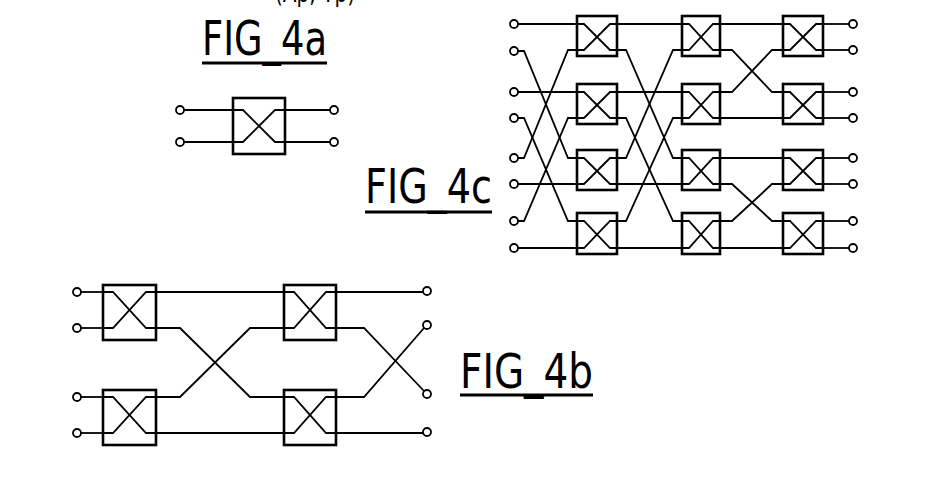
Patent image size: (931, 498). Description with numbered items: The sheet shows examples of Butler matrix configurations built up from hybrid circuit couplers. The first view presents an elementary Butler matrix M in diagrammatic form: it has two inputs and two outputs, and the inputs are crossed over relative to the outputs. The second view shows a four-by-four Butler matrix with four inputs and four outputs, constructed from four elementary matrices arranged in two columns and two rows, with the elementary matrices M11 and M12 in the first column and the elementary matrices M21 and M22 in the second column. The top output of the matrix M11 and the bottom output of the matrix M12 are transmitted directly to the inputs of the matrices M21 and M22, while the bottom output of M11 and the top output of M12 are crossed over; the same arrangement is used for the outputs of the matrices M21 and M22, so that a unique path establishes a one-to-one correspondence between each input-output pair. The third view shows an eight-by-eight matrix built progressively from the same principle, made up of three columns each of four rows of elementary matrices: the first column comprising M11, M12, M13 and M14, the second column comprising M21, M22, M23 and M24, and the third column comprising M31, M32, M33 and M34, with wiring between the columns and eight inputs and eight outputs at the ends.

In FIG. 4a, the elementary Butler matrix M is at (254, 98).
In FIG. 4b, the elementary matrix M11 is at (122, 285).
In FIG. 4c, the elementary matrix M11 is at (617, 36).
In FIG. 4b, the elementary matrix M12 is at (122, 390).
In FIG. 4c, the elementary matrix M12 is at (585, 84).
In FIG. 4c, the elementary matrix M13 is at (585, 150).
In FIG. 4c, the elementary matrix M14 is at (585, 213).
In FIG. 4b, the elementary matrix M21 is at (302, 285).
In FIG. 4c, the elementary matrix M21 is at (720, 36).
In FIG. 4b, the elementary matrix M22 is at (302, 390).
In FIG. 4c, the elementary matrix M22 is at (689, 84).
In FIG. 4c, the elementary matrix M23 is at (689, 150).
In FIG. 4c, the elementary matrix M24 is at (689, 213).
In FIG. 4c, the elementary matrix M31 is at (823, 37).
In FIG. 4c, the elementary matrix M32 is at (791, 84).
In FIG. 4c, the elementary matrix M33 is at (791, 150).
In FIG. 4c, the elementary matrix M34 is at (791, 213).